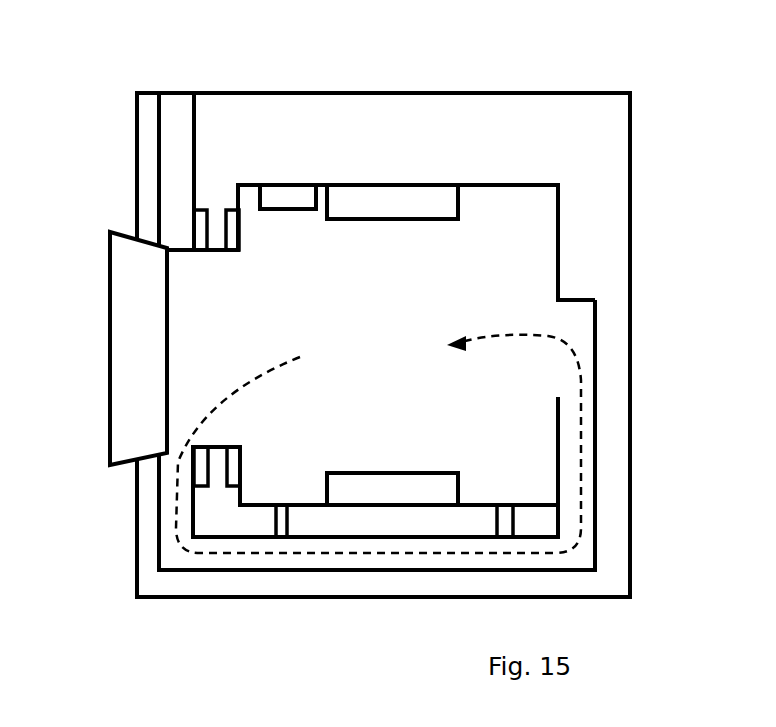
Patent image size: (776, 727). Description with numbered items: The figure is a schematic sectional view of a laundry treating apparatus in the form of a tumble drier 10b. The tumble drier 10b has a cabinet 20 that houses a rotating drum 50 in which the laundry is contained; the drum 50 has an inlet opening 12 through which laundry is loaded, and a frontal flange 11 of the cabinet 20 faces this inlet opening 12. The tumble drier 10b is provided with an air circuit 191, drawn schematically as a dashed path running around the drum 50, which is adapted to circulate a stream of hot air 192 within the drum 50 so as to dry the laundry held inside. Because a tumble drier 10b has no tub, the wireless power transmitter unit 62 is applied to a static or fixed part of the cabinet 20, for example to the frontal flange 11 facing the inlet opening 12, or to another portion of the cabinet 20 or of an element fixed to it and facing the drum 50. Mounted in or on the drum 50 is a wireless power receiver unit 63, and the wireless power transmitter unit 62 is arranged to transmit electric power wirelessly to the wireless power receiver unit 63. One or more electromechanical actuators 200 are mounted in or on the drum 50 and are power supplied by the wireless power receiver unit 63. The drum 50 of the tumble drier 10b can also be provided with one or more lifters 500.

The tumble drier 10b is at (496, 62).
The frontal flange 11 is at (180, 130).
The inlet opening 12 is at (208, 308).
The cabinet 20 is at (633, 132).
The drum 50 is at (497, 185).
The wireless power transmitter unit 62 is at (199, 228).
The wireless power receiver unit 63 is at (240, 240).
The air circuit 191 is at (598, 446).
The stream of hot air 192 is at (553, 338).
The electromechanical actuator 200 is at (296, 187).
The lifter 500 is at (372, 200).